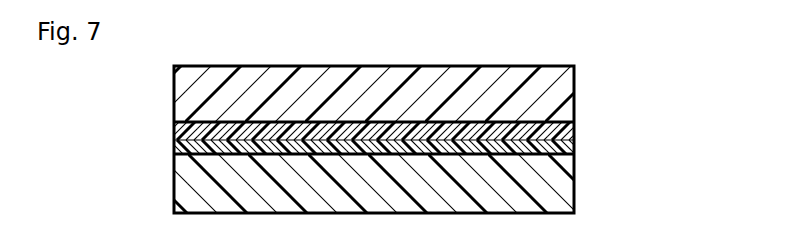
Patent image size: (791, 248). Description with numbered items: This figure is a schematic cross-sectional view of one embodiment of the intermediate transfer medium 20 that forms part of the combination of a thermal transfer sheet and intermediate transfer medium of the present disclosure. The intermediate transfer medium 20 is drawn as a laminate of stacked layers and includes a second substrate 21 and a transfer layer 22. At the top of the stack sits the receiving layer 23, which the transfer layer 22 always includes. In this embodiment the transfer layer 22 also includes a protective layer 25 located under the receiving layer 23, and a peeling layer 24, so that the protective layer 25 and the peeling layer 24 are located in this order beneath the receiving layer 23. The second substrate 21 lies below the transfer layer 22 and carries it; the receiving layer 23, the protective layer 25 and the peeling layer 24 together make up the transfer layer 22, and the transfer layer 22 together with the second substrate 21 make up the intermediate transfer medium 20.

The intermediate transfer medium 20 is at (465, 139).
The second substrate 21 is at (558, 186).
The transfer layer 22 is at (437, 119).
The receiving layer 23 is at (559, 93).
The peeling layer 24 is at (410, 151).
The protective layer 25 is at (560, 128).